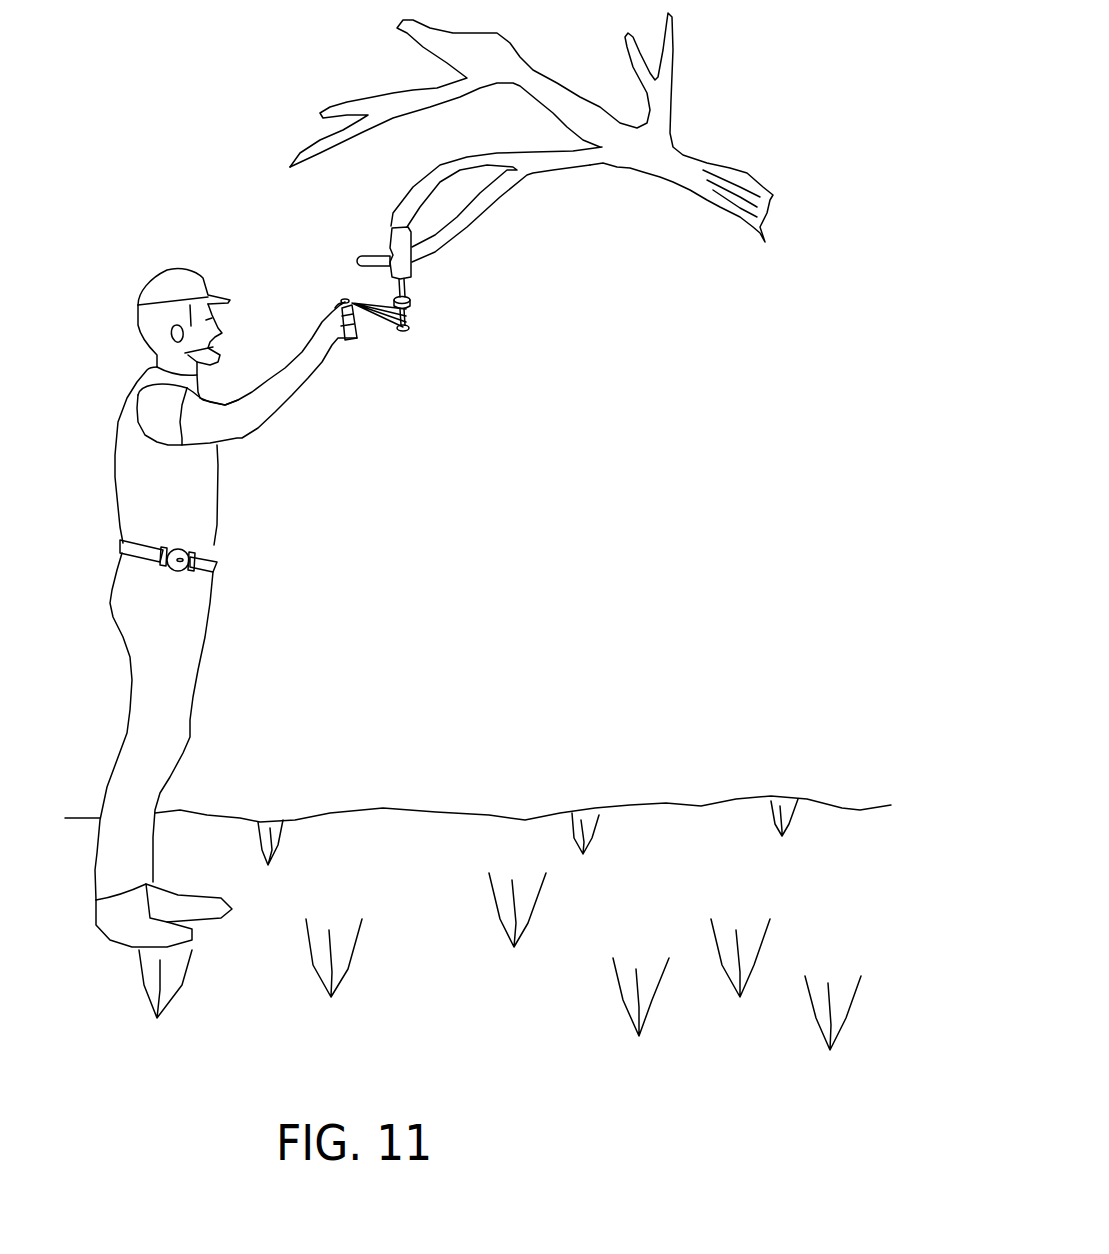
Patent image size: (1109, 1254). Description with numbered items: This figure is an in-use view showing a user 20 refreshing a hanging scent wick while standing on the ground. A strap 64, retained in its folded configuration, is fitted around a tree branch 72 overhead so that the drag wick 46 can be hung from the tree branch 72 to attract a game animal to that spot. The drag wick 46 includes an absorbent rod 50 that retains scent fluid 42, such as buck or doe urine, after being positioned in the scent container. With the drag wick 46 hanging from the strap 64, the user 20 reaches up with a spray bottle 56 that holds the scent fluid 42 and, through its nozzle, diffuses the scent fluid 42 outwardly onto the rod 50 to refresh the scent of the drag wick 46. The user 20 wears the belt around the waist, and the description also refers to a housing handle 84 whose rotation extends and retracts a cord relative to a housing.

The user 20 is at (120, 410).
The scent fluid 42 is at (380, 312).
The drag wick 46 is at (411, 300).
The rod 50 is at (409, 315).
The spray bottle 56 is at (363, 345).
The strap 64 is at (390, 240).
The tree branch 72 is at (553, 173).
The housing handle 84 is at (620, 817).